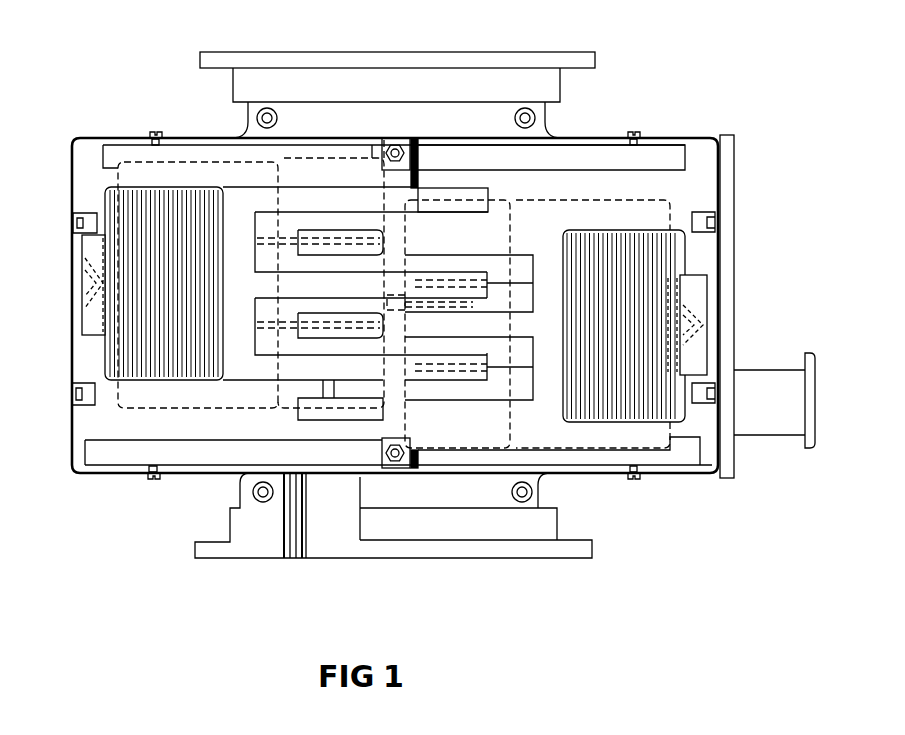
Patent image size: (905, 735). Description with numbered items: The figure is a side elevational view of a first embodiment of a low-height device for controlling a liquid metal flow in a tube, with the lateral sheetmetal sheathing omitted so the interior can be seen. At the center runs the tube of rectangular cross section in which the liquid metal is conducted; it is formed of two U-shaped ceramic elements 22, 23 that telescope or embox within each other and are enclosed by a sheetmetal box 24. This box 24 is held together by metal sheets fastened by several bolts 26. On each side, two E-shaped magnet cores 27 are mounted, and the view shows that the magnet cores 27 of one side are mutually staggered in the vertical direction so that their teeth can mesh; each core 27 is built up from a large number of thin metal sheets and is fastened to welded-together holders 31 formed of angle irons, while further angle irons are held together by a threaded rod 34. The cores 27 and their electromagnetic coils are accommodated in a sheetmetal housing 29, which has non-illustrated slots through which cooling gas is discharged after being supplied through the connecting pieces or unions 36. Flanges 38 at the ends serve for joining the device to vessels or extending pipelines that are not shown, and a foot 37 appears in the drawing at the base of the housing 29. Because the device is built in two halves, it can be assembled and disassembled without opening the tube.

The U-shaped ceramic element 22 is at (302, 557).
The U-shaped ceramic element 23 is at (295, 557).
The sheetmetal box 24 is at (287, 545).
The bolt 26 is at (523, 500).
The E-shaped magnet core 27 is at (267, 370).
The sheetmetal housing 29 is at (73, 143).
The holder 31 is at (91, 240).
The threaded rod 34 is at (397, 140).
The connecting piece 36 is at (773, 427).
The mounting foot 37 is at (205, 552).
The flange 38 is at (230, 58).